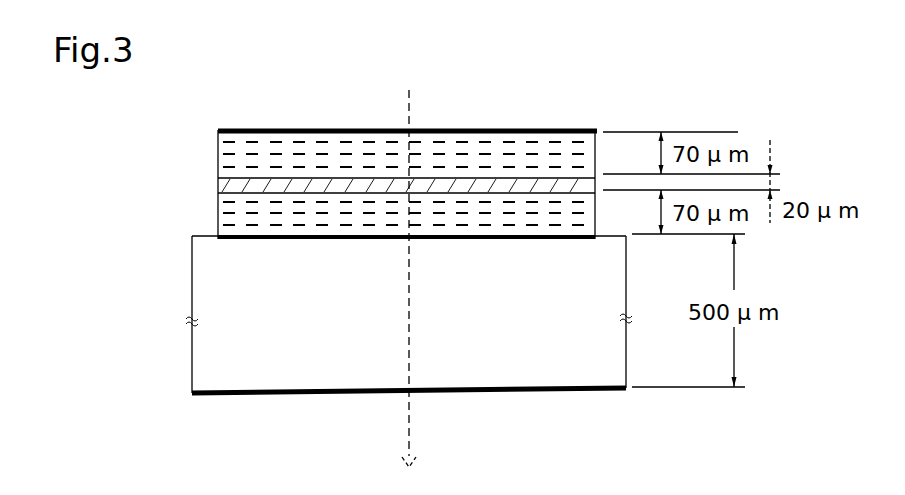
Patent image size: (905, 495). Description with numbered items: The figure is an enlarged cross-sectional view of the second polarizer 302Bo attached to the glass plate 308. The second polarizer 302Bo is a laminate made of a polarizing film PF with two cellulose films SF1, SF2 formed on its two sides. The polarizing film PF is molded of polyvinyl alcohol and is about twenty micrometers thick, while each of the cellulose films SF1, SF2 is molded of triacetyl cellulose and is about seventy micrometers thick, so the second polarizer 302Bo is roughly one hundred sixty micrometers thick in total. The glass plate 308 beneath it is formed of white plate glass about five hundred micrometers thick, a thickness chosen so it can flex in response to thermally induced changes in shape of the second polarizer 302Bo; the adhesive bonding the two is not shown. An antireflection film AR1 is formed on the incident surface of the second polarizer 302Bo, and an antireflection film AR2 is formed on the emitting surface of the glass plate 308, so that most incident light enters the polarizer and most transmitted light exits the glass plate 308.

The second polarizer 302Bo is at (128, 142).
The cellulose film SF1 is at (218, 153).
The polarizing film PF is at (218, 185).
The cellulose film SF2 is at (218, 225).
The antireflection film AR1 is at (493, 123).
The antireflection film AR2 is at (497, 393).
The glass plate 308 is at (192, 358).